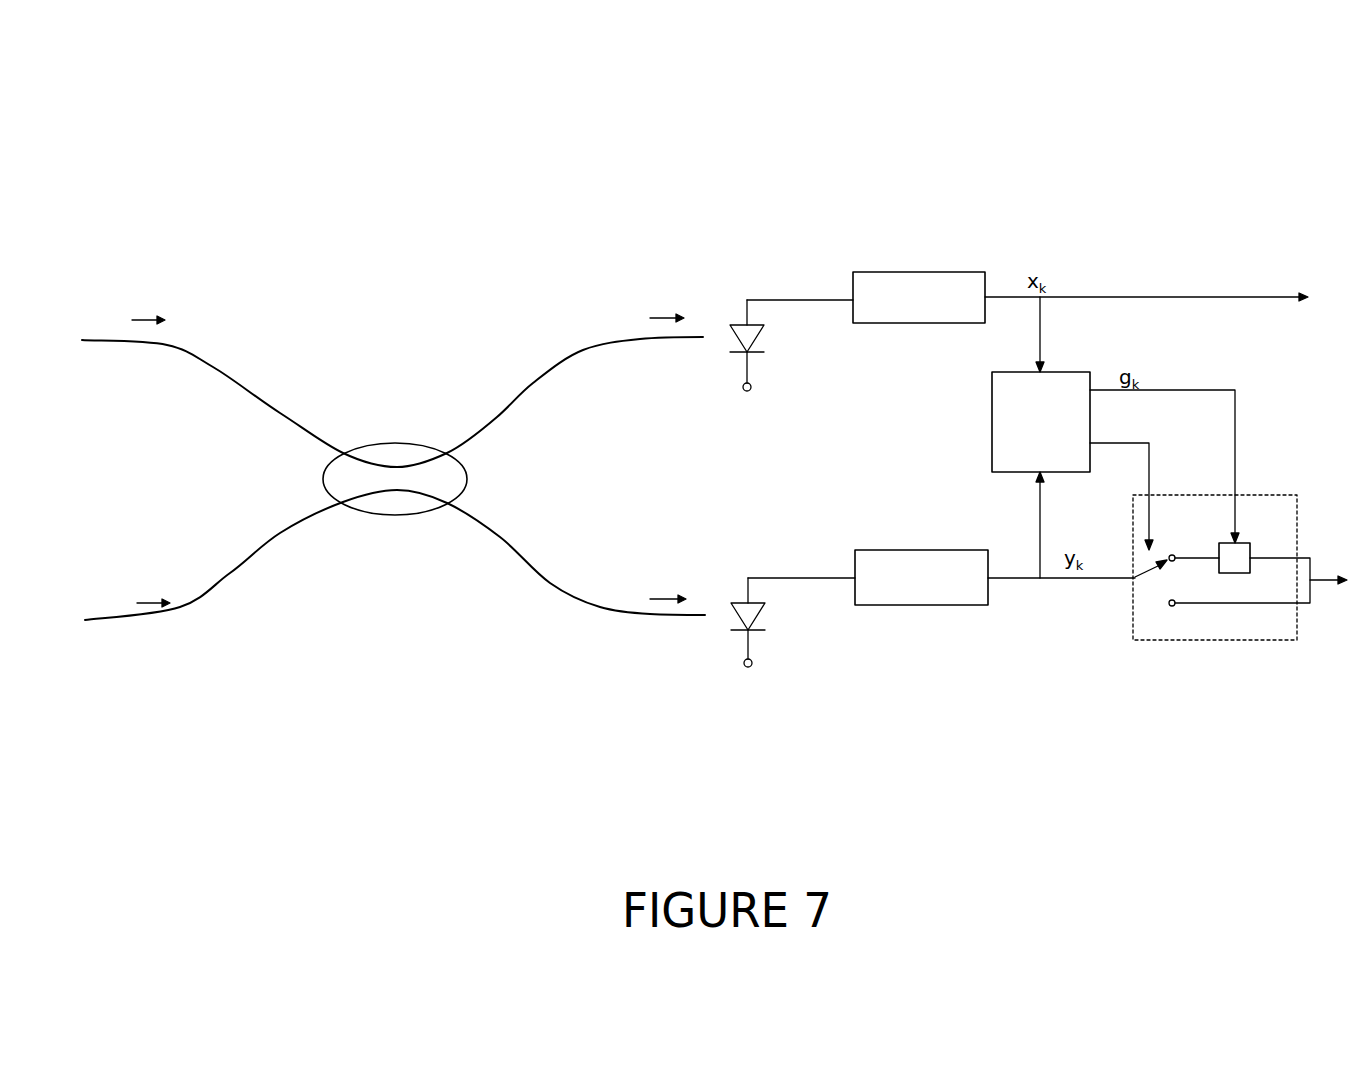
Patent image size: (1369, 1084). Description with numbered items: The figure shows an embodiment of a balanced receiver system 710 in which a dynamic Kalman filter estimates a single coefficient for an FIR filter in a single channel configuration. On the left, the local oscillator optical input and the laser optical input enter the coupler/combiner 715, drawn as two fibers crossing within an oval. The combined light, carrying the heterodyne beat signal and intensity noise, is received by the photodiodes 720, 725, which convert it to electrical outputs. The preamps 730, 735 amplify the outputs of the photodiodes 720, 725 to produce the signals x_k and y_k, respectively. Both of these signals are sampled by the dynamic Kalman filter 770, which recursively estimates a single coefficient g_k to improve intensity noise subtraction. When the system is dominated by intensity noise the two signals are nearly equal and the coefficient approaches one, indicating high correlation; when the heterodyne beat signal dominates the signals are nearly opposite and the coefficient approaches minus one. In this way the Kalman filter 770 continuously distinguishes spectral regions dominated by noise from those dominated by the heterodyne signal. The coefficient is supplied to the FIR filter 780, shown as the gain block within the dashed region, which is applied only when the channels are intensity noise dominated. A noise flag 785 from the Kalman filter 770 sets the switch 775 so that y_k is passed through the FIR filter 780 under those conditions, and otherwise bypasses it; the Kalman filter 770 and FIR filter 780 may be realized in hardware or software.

The balanced receiver system 710 is at (663, 206).
The coupler/combiner 715 is at (400, 450).
The photodiode 720 is at (762, 332).
The photodiode 725 is at (762, 612).
The preamp 730 is at (920, 283).
The preamp 735 is at (918, 558).
The dynamic Kalman filter 770 is at (998, 423).
The switch 775 is at (1143, 573).
The FIR filter 780 is at (1243, 552).
The noise flag 785 is at (1148, 465).